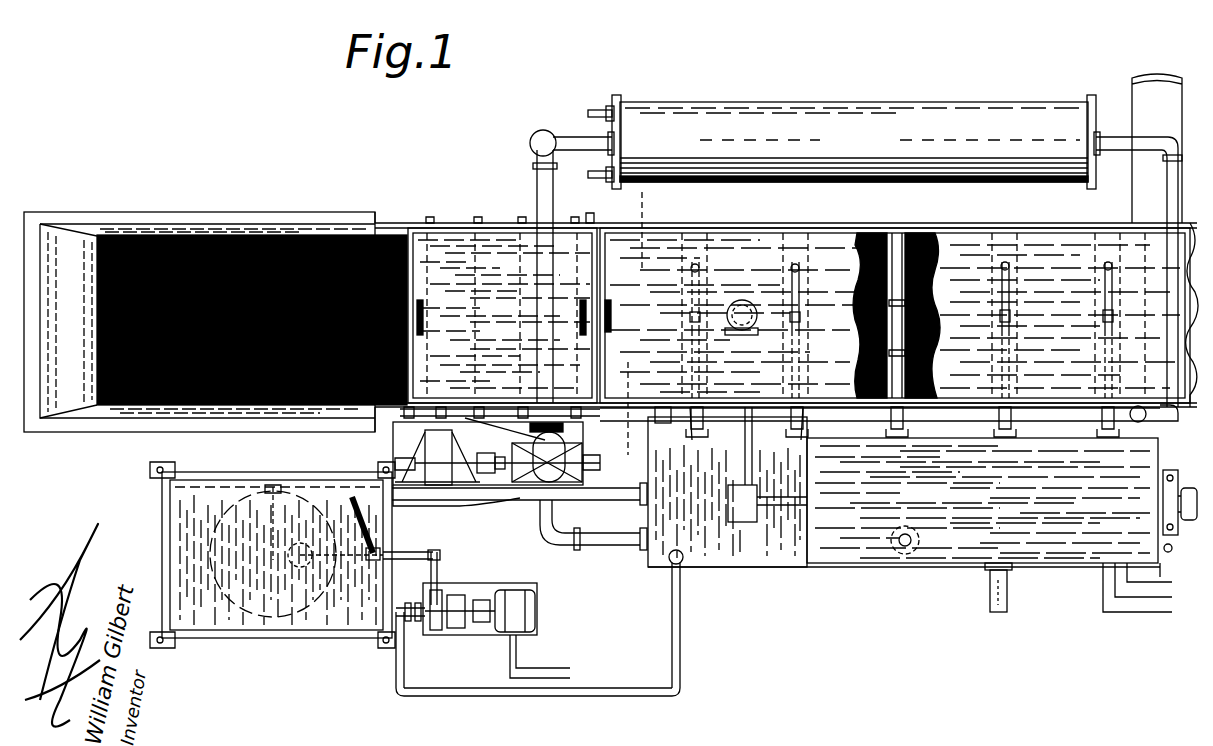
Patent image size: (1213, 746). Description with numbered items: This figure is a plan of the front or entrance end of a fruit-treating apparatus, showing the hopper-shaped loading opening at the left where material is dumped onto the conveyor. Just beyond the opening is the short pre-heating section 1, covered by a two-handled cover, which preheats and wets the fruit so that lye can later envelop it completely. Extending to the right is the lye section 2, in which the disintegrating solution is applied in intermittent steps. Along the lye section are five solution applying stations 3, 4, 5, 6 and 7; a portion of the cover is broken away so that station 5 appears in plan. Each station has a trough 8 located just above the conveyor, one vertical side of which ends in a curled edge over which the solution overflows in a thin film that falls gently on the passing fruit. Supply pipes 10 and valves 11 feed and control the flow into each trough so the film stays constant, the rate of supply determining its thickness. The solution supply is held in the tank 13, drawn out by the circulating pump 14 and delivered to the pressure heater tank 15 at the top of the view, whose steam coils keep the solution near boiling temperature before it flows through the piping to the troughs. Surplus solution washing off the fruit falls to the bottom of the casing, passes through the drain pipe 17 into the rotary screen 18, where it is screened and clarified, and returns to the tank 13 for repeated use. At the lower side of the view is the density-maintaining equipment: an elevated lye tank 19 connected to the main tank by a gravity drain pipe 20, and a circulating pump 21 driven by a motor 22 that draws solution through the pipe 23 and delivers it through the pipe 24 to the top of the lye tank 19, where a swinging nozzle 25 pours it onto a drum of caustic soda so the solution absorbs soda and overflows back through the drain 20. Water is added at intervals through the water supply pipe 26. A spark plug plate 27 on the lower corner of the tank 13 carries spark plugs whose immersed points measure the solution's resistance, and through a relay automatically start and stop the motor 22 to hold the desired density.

The pre-heating section 1 is at (515, 291).
The lye section 2 is at (899, 315).
The solution applying station 3 is at (700, 256).
The solution applying station 4 is at (805, 246).
The solution applying station 5 is at (505, 191).
The solution applying station 6 is at (1006, 240).
The solution applying station 7 is at (654, 215).
The trough 8 is at (872, 233).
The supply pipe 10 is at (980, 424).
The valve 11 is at (885, 432).
The tank 13 is at (752, 545).
The circulating pump 14 is at (545, 455).
The pressure heater tank 15 is at (830, 108).
The drain pipe 17 is at (742, 450).
The rotary screen 18 is at (922, 502).
The lye tank 19 is at (222, 625).
The gravity drain pipe 20 is at (598, 492).
The circulating pump 21 is at (436, 628).
The motor 22 is at (540, 612).
The pipe 23 is at (580, 692).
The pipe 24 is at (437, 556).
The swinging nozzle 25 is at (324, 526).
The water supply pipe 26 is at (988, 587).
The spark plug plate 27 is at (1103, 568).